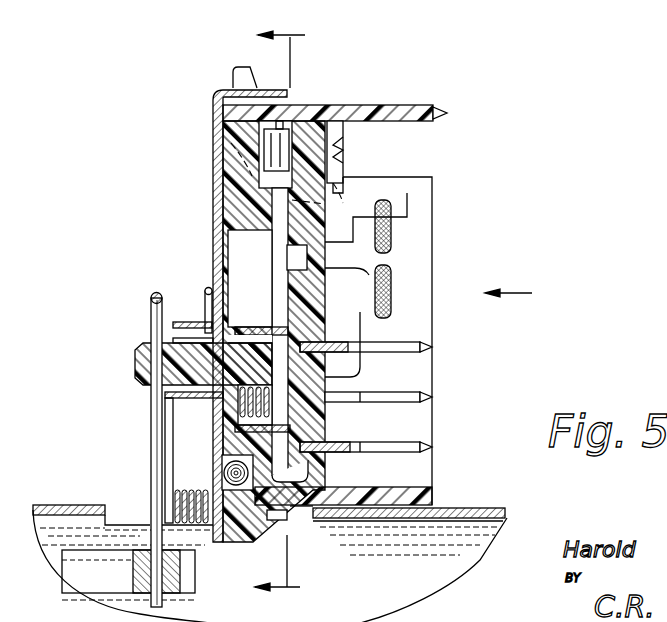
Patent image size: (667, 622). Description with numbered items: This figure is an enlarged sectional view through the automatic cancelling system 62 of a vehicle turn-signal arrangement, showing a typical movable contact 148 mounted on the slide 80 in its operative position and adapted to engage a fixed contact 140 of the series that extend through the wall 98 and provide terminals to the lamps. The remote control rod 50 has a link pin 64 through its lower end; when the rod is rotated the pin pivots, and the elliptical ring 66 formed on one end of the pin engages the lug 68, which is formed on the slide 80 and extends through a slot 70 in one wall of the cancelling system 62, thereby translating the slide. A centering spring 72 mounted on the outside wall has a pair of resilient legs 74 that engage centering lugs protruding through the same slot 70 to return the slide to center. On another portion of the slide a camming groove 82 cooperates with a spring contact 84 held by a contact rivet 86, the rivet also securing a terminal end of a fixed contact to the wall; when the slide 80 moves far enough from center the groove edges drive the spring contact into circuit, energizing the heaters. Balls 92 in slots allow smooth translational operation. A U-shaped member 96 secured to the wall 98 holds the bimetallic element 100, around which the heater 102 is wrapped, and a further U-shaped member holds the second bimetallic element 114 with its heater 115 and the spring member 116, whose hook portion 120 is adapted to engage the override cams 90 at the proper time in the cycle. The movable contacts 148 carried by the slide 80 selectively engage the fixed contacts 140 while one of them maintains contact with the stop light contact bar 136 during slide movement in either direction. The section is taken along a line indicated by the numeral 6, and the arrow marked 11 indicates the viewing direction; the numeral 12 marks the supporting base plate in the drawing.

The section line 6- 6 is at (280, 313).
The direction arrow 11 is at (522, 297).
The base plate 12 is at (47, 507).
The remote control rod 50 is at (83, 563).
The automatic cancelling system 62 is at (425, 107).
The link pin 64 is at (152, 440).
The elliptical ring 66 is at (152, 314).
The lug 68 is at (135, 366).
The slot 70 is at (180, 402).
The centering spring 72 is at (182, 490).
The resilient legs 74 is at (204, 291).
The slide 80 is at (223, 128).
The camming groove 82 is at (268, 130).
The spring contact 84 is at (281, 304).
The contact rivet 86 is at (338, 140).
The override cams 90 is at (280, 203).
The balls 92 is at (223, 157).
The U-shaped member 96 is at (352, 366).
The wall 98 is at (311, 490).
The bimetallic element 100 is at (392, 307).
The heater 102 is at (392, 272).
The bimetallic element 114 is at (392, 227).
The heater 115 is at (392, 205).
The spring member 116 is at (367, 197).
The hook portion 120 is at (308, 173).
The stop light contact bar 136 is at (432, 346).
The fixed contacts 140 is at (432, 395).
The movable contacts 148 is at (242, 330).